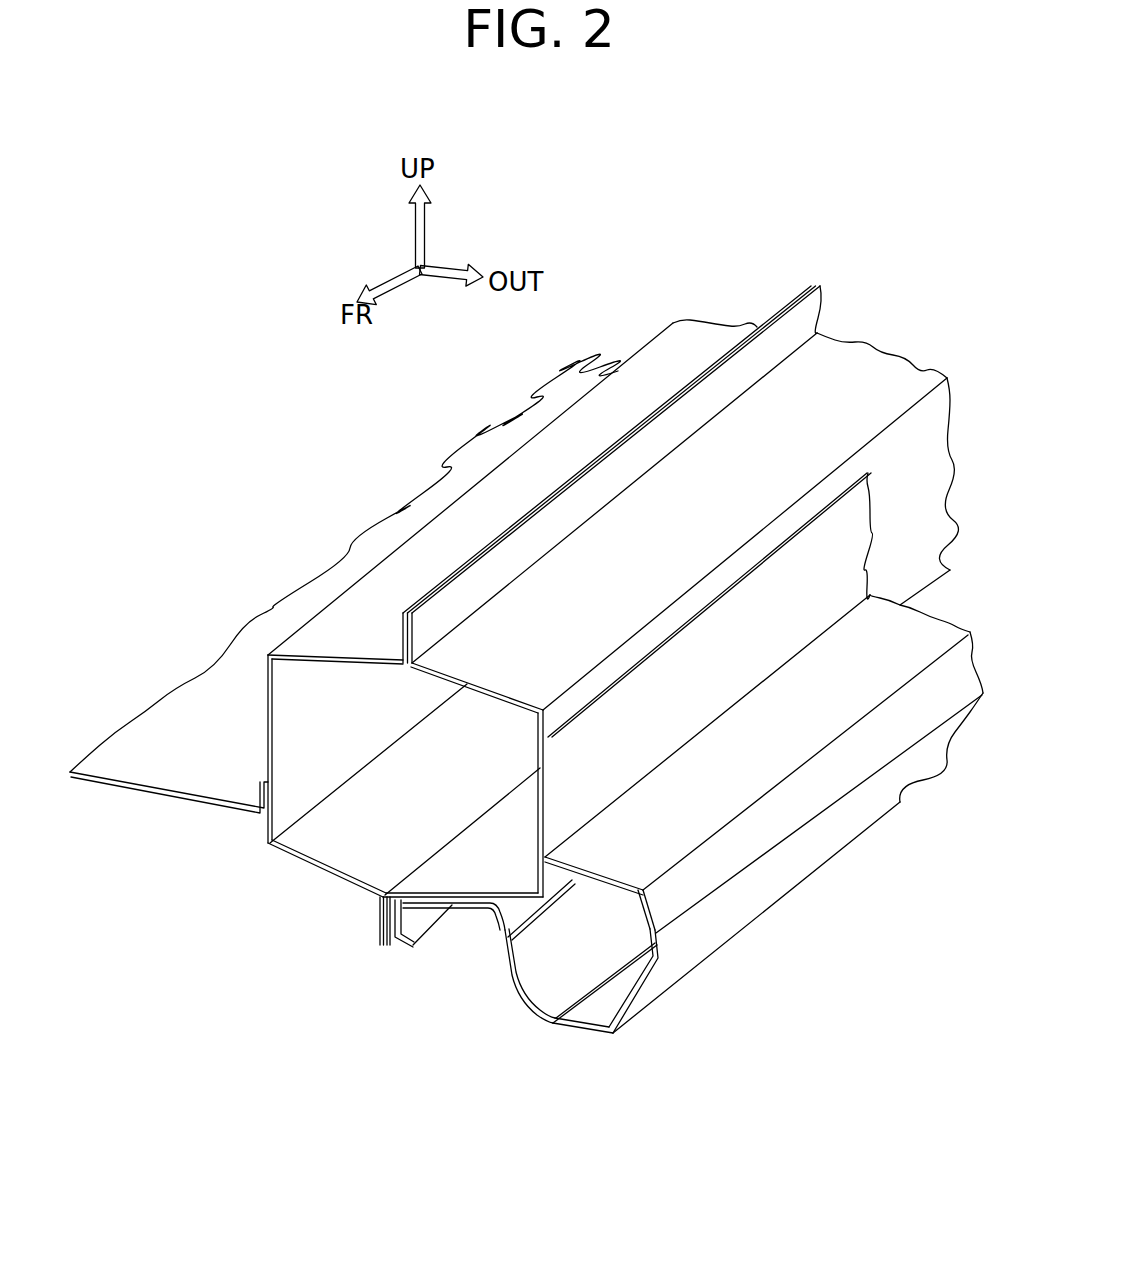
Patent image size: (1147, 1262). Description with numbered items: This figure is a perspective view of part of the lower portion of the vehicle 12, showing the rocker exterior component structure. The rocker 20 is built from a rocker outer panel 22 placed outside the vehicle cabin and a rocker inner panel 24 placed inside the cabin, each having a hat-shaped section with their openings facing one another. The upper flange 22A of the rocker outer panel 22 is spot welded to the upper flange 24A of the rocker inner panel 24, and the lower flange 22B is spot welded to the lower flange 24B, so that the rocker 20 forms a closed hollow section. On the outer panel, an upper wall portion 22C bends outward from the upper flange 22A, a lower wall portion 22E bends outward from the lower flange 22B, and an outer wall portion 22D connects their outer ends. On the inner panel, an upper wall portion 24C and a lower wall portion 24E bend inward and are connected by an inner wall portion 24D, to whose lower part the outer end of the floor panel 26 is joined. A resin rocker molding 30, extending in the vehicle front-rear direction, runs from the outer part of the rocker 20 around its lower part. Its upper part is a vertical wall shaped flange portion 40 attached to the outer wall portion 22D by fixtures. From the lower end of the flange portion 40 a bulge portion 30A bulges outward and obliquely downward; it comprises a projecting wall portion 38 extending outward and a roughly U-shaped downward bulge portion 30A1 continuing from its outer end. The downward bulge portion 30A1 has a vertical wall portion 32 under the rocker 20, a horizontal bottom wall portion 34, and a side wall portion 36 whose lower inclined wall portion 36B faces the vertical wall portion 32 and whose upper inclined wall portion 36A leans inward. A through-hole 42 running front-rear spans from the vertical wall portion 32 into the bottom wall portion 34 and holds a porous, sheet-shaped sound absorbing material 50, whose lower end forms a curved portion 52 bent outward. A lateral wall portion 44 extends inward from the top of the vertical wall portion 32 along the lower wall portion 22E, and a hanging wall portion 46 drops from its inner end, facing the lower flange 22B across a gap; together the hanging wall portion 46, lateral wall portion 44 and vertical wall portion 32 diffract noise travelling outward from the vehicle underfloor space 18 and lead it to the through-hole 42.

The vehicle body 12 is at (893, 175).
The vehicle underfloor space 18 is at (117, 970).
The rocker 20 is at (822, 235).
The rocker outer panel 22 is at (896, 335).
The upper flange 22A is at (490, 577).
The lower flange 22B is at (412, 948).
The upper wall portion 22C is at (468, 657).
The outer wall portion 22D is at (537, 762).
The lower wall portion 22E is at (455, 863).
The rocker inner panel 24 is at (716, 303).
The upper flange 24A is at (403, 640).
The lower flange 24B is at (380, 918).
The upper wall portion 24C is at (325, 640).
The inner wall portion 24D is at (265, 722).
The lower wall portion 24E is at (347, 808).
The floor panel 26 is at (150, 735).
The rocker molding 30 is at (689, 853).
The bulge portion 30A is at (645, 804).
The downward bulge portion 30A1 is at (690, 985).
The vertical wall portion 32 is at (495, 922).
The bottom wall portion 34 is at (573, 1040).
The side wall portion 36 is at (796, 847).
The upper inclined wall portion 36A is at (830, 785).
The lower inclined wall portion 36B is at (820, 842).
The projecting wall portion 38 is at (688, 777).
The flange portion 40 is at (733, 678).
The through-hole 42 is at (500, 947).
The lateral wall portion 44 is at (441, 907).
The hanging wall portion 46 is at (420, 913).
The sound absorbing material 50 is at (589, 908).
The curved portion 52 is at (520, 1008).